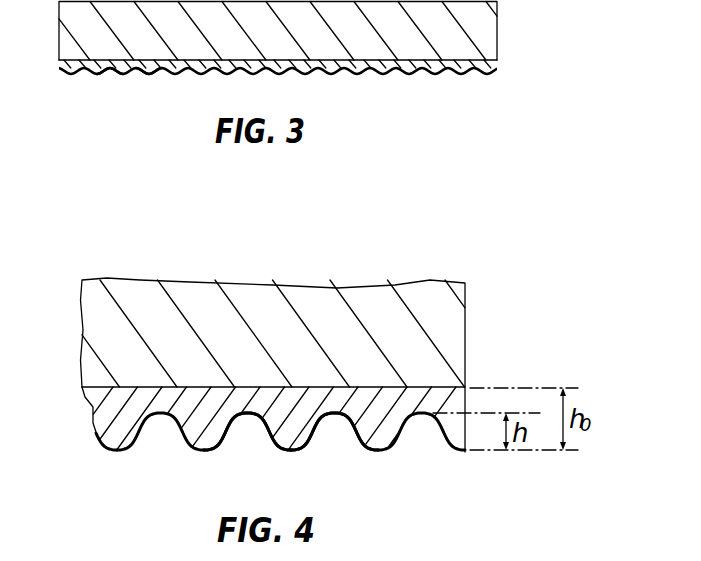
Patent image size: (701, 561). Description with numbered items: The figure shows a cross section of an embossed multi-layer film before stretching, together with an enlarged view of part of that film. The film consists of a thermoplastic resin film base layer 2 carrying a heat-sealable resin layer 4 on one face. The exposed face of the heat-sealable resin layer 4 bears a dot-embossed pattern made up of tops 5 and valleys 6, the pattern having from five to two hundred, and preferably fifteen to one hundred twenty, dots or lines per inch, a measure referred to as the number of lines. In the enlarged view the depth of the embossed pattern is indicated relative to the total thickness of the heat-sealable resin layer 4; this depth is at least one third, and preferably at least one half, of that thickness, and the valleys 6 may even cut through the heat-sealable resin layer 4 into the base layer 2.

In FIG. 3, the thermoplastic resin film base layer 2 is at (489, 35).
In FIG. 4, the thermoplastic resin film base layer 2 is at (462, 312).
In FIG. 3, the heat-sealable resin layer 4 is at (482, 71).
In FIG. 4, the heat-sealable resin layer 4 is at (98, 410).
In FIG. 3, the tops of dot-embossed pattern 5 is at (141, 77).
In FIG. 4, the tops of dot-embossed pattern 5 is at (212, 449).
In FIG. 3, the valleys of dot-embossed pattern 6 is at (104, 76).
In FIG. 4, the valleys of dot-embossed pattern 6 is at (342, 416).